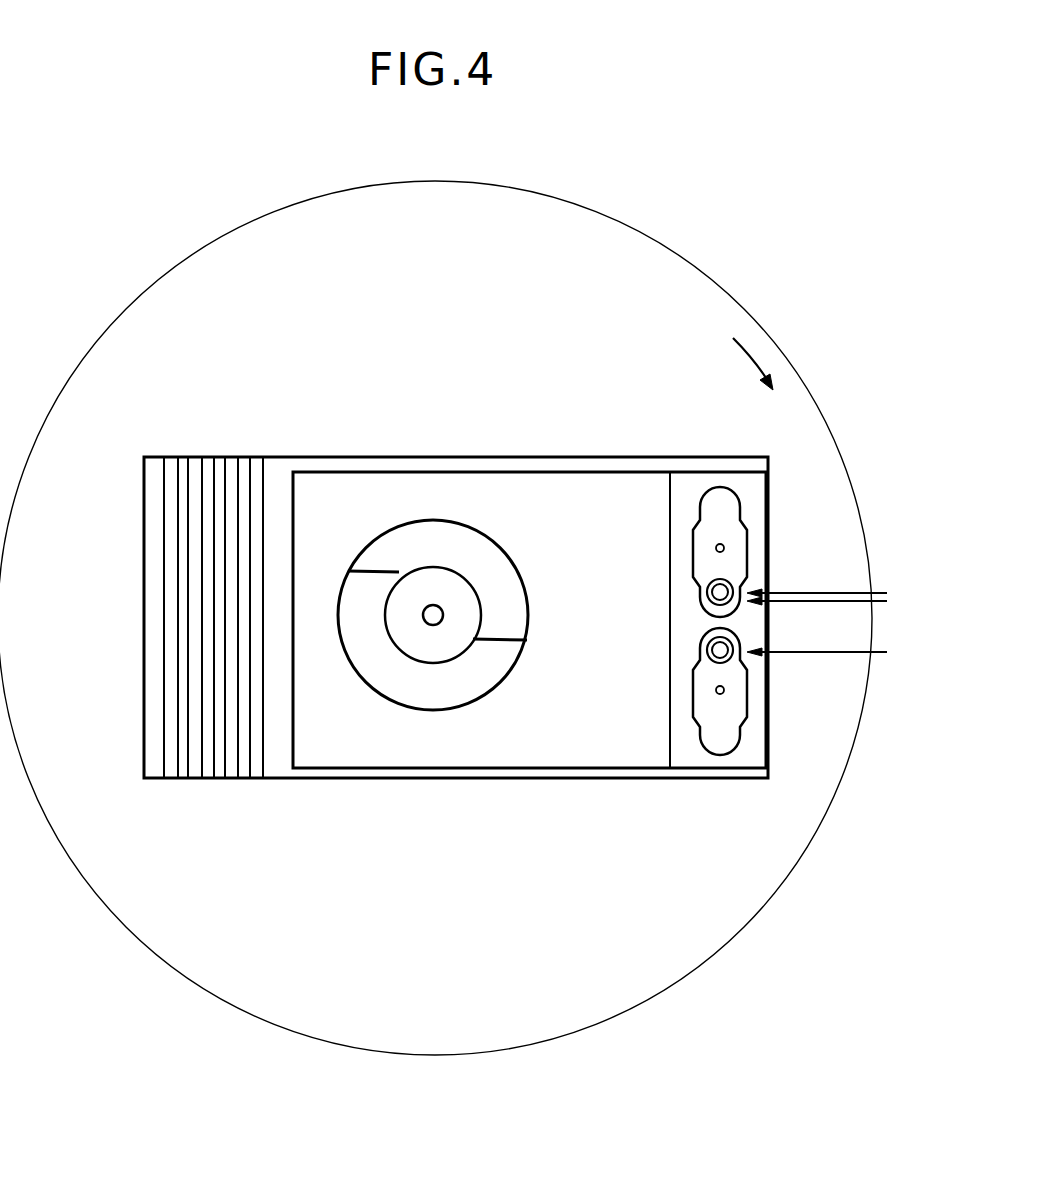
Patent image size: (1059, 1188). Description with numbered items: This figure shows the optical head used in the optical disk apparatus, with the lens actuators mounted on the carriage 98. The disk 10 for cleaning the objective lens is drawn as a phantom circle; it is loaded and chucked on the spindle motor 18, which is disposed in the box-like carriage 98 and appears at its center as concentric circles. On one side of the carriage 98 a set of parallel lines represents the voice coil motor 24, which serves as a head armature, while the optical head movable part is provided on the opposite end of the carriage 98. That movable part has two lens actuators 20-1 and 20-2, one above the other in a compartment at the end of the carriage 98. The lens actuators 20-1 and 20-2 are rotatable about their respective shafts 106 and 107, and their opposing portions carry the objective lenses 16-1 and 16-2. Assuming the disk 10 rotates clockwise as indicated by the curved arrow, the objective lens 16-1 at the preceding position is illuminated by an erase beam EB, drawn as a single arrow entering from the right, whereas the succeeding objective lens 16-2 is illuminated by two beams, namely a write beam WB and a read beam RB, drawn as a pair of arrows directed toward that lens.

The disk 10 is at (730, 293).
The voice coil motor 24 is at (222, 771).
The carriage 98 is at (475, 780).
The spindle motor 18 is at (400, 693).
The lens actuator 20-2 is at (712, 498).
The lens actuator 20-1 is at (715, 743).
The shaft 107 is at (723, 547).
The shaft 106 is at (723, 692).
The objective lens 16-2 is at (708, 592).
The objective lens 16-1 is at (708, 650).
The read beam RB is at (810, 593).
The write beam WB is at (818, 601).
The erase beam EB is at (810, 652).